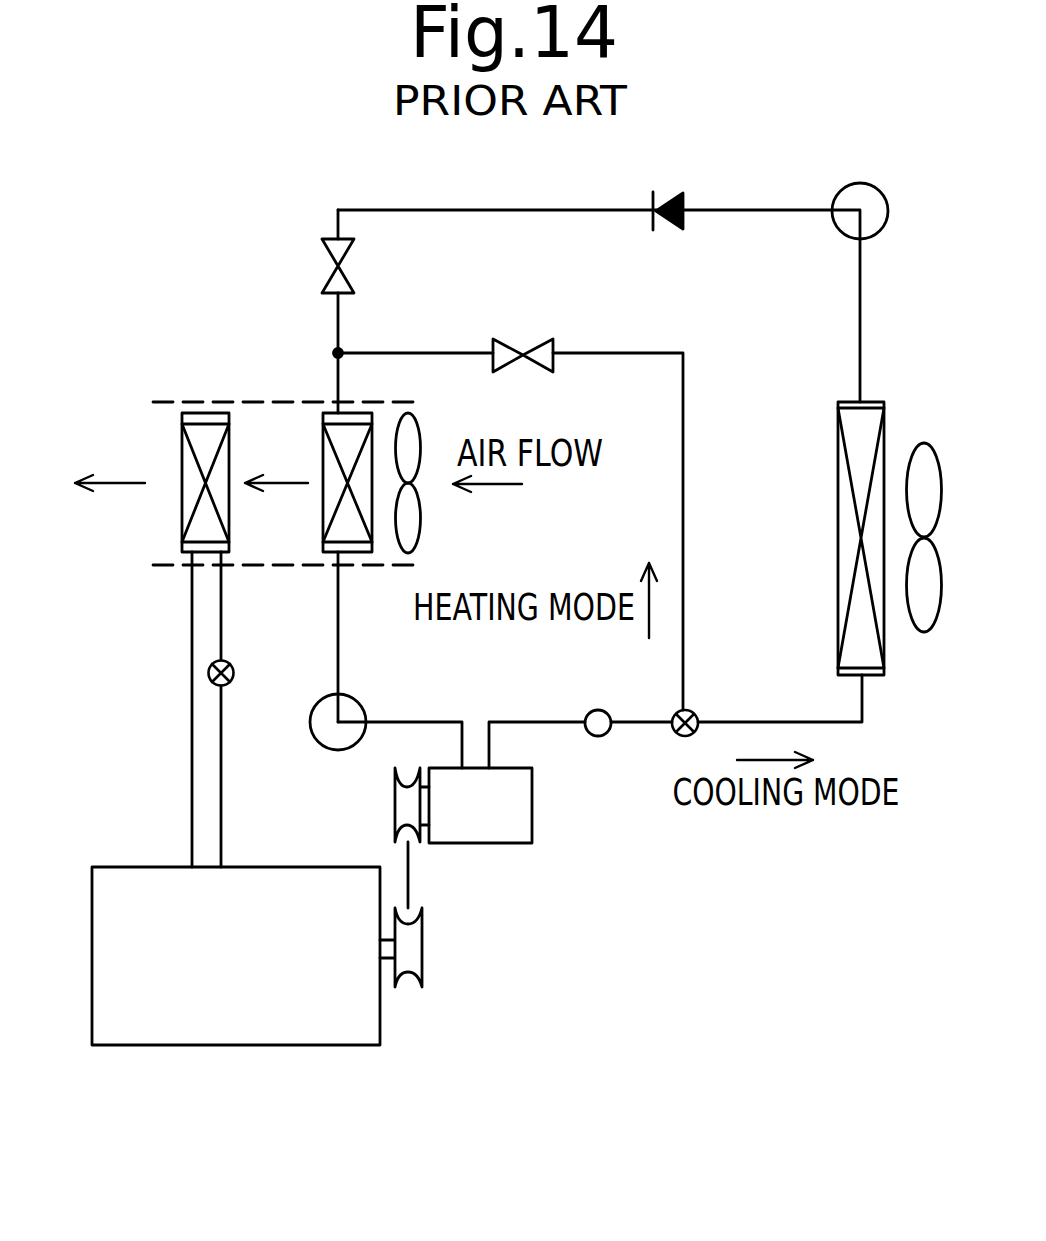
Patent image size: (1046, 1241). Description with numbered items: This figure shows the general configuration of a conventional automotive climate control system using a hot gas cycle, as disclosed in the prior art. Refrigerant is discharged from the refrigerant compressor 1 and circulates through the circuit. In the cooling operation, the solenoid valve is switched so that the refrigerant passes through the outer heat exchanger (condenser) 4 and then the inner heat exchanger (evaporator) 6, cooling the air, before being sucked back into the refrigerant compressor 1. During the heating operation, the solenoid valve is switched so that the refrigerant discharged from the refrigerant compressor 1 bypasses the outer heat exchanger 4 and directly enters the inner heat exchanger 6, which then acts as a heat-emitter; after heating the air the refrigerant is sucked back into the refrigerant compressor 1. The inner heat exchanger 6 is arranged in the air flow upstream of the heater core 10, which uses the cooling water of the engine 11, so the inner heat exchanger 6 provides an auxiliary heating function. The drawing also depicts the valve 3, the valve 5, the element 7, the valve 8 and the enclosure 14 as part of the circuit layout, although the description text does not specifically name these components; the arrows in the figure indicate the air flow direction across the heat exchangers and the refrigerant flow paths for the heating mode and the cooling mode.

The refrigerant compressor 1 is at (488, 843).
The expansion valve 3 is at (675, 733).
The outer heat exchanger 4 is at (885, 422).
The expansion valve 5 is at (335, 238).
The inner heat exchanger 6 is at (323, 425).
The accumulator 7 is at (315, 743).
The solenoid valve 8 is at (545, 342).
The heater core 10 is at (166, 516).
The engine 11 is at (188, 1045).
The air conditioning unit casing 14 is at (253, 402).